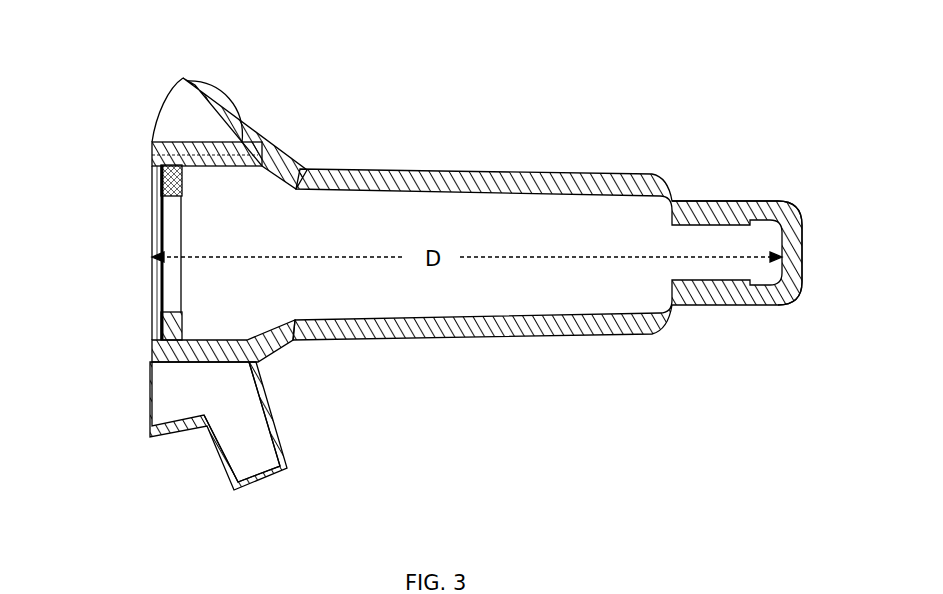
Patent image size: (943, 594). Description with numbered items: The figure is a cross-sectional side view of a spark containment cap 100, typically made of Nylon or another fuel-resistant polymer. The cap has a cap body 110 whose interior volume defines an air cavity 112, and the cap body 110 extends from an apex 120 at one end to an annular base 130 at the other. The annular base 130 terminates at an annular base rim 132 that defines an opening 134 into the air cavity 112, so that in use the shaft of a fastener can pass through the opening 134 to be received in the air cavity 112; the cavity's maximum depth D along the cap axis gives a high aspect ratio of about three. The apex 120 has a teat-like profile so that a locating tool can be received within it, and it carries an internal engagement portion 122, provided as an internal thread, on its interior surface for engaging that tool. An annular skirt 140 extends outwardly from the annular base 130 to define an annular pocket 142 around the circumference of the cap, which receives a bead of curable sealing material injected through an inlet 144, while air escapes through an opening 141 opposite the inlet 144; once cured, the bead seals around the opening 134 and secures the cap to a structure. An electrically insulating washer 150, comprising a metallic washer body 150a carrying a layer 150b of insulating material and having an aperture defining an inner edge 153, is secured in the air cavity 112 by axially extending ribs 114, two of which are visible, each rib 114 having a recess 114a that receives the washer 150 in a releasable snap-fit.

The spark containment cap 100 is at (640, 121).
The cap body 110 is at (565, 265).
The air cavity 112 is at (308, 227).
The ribs 114 is at (238, 165).
The recess 114a is at (158, 344).
The apex 120 is at (758, 304).
The internal engagement portion 122 is at (708, 218).
The annular base 130 is at (208, 251).
The annular base rim 132 is at (152, 151).
The opening 134 is at (141, 297).
The annular skirt 140 is at (205, 78).
The opening 141 is at (172, 102).
The annular pocket 142 is at (210, 403).
The inlet 144 is at (283, 435).
The washer 150 is at (255, 272).
The washer body 150a is at (160, 330).
The layer 150b is at (153, 190).
The inner edge 153 is at (160, 205).